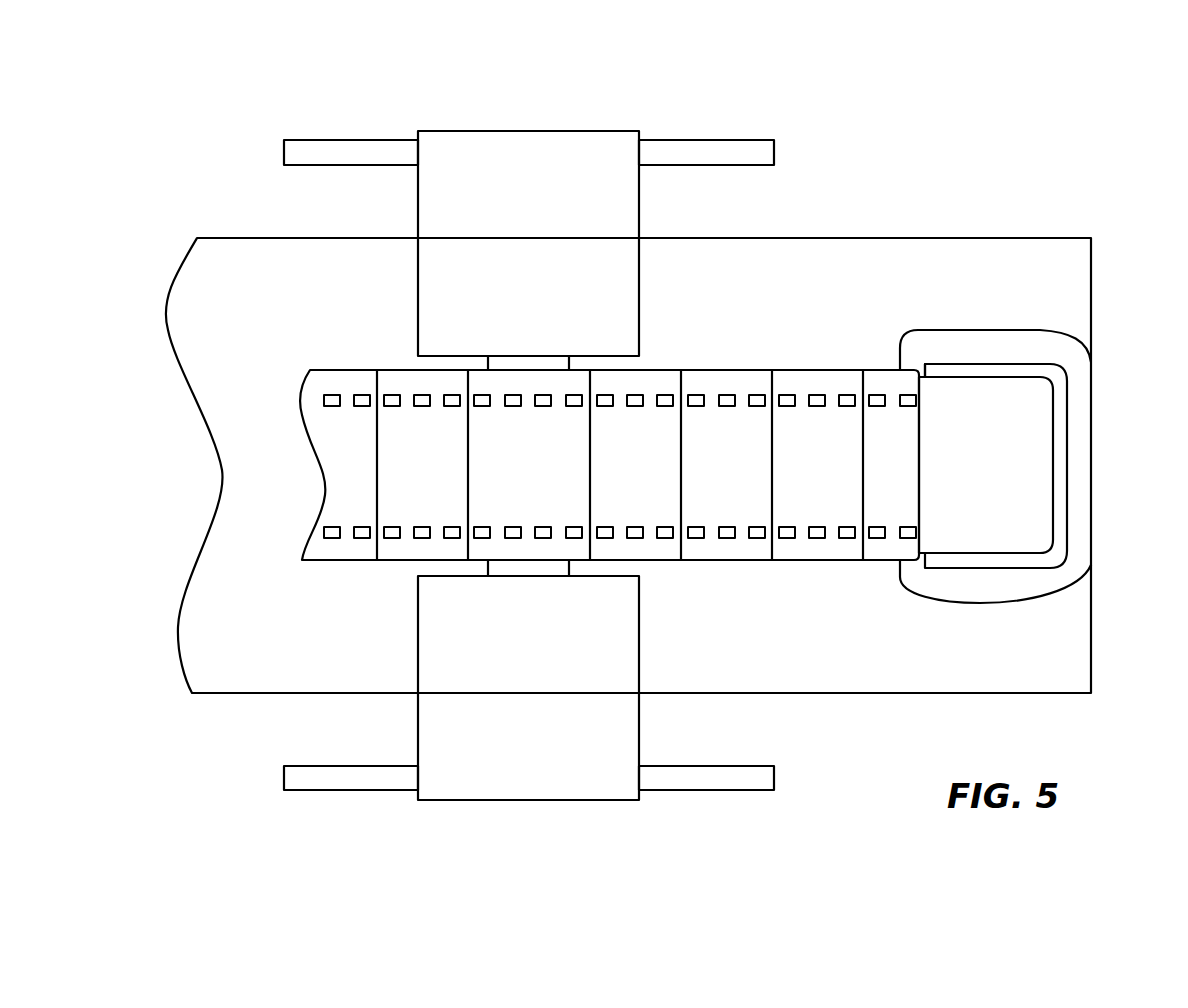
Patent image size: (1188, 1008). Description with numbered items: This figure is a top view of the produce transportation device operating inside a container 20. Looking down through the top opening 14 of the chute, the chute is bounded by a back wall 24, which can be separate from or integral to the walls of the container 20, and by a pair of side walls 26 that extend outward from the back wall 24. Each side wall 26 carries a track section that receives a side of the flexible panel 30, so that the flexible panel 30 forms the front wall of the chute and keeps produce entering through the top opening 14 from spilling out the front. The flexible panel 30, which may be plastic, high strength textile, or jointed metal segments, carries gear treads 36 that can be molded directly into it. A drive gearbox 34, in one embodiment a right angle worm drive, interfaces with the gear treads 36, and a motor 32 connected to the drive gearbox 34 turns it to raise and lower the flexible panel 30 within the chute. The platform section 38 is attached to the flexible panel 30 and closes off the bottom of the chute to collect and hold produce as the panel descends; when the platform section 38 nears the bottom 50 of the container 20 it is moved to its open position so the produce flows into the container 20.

The top opening 14 is at (958, 370).
The container 20 is at (1091, 283).
The back wall 24 is at (1077, 465).
The side walls 26 is at (1027, 352).
The flexible panel 30 is at (360, 370).
The motor 32 is at (584, 172).
The drive gearbox 34 is at (515, 538).
The gear treads 36 is at (332, 390).
The platform section 38 is at (978, 427).
The bottom of the container 50 is at (793, 635).